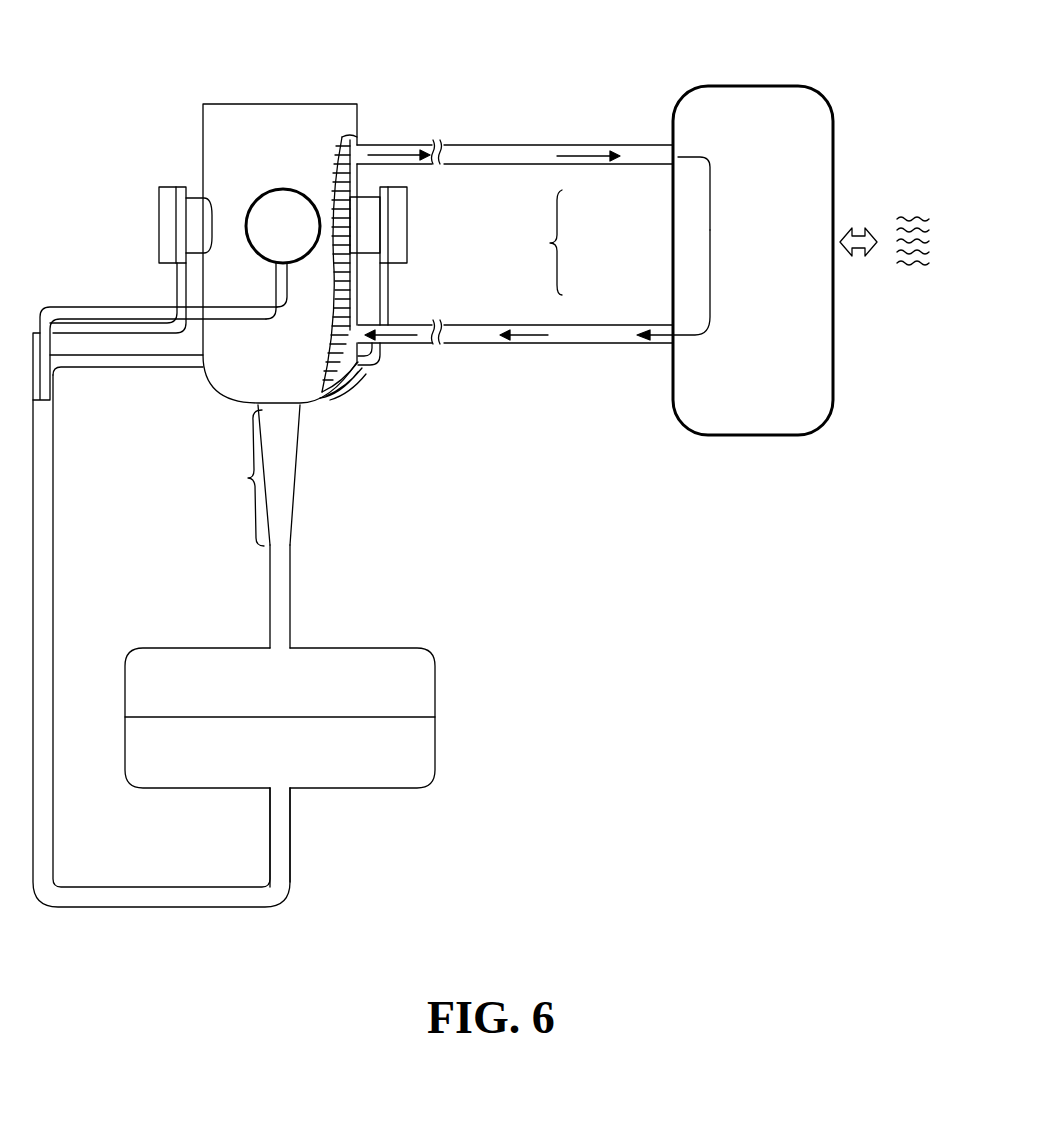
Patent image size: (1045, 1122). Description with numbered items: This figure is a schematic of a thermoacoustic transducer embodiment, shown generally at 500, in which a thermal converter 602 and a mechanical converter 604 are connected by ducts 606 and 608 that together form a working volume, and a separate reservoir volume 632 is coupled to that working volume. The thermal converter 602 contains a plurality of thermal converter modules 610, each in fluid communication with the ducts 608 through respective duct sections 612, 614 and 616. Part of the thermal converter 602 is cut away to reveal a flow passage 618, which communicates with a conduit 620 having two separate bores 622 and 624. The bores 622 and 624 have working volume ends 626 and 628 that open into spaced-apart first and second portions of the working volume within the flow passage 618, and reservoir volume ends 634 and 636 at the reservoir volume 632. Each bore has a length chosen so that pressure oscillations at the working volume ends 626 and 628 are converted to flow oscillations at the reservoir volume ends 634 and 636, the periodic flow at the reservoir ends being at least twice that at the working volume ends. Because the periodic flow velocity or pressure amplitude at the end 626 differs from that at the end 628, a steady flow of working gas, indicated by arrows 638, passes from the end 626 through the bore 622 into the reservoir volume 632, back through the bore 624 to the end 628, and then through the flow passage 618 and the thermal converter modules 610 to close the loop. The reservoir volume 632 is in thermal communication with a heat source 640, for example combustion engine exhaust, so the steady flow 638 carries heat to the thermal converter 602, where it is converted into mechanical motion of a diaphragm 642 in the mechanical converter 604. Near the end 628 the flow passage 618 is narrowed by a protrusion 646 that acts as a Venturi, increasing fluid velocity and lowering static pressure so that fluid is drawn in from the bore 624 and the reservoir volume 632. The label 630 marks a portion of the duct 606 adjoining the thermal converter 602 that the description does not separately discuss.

The thermal management system 500 is at (516, 99).
The thermal converter 602 is at (188, 101).
The mechanical converter 604 is at (445, 637).
The duct 606 is at (269, 607).
The duct 608 is at (57, 605).
The thermal converter module 610 is at (278, 203).
The duct section 612 is at (112, 367).
The duct section 614 is at (162, 338).
The duct section 616 is at (59, 307).
The flow passage 618 is at (352, 293).
The conduit 620 is at (585, 242).
The bore 622 is at (538, 166).
The bore 624 is at (535, 322).
The working volume end 626 is at (354, 148).
The working volume end 628 is at (355, 335).
The tapered neck 630 is at (251, 475).
The reservoir volume 632 is at (752, 84).
The reservoir volume end 634 is at (668, 168).
The reservoir volume end 636 is at (668, 346).
The arrows 638 is at (589, 143).
The heat source 640 is at (938, 273).
The diaphragm 642 is at (405, 718).
The protrusion 646 is at (350, 387).